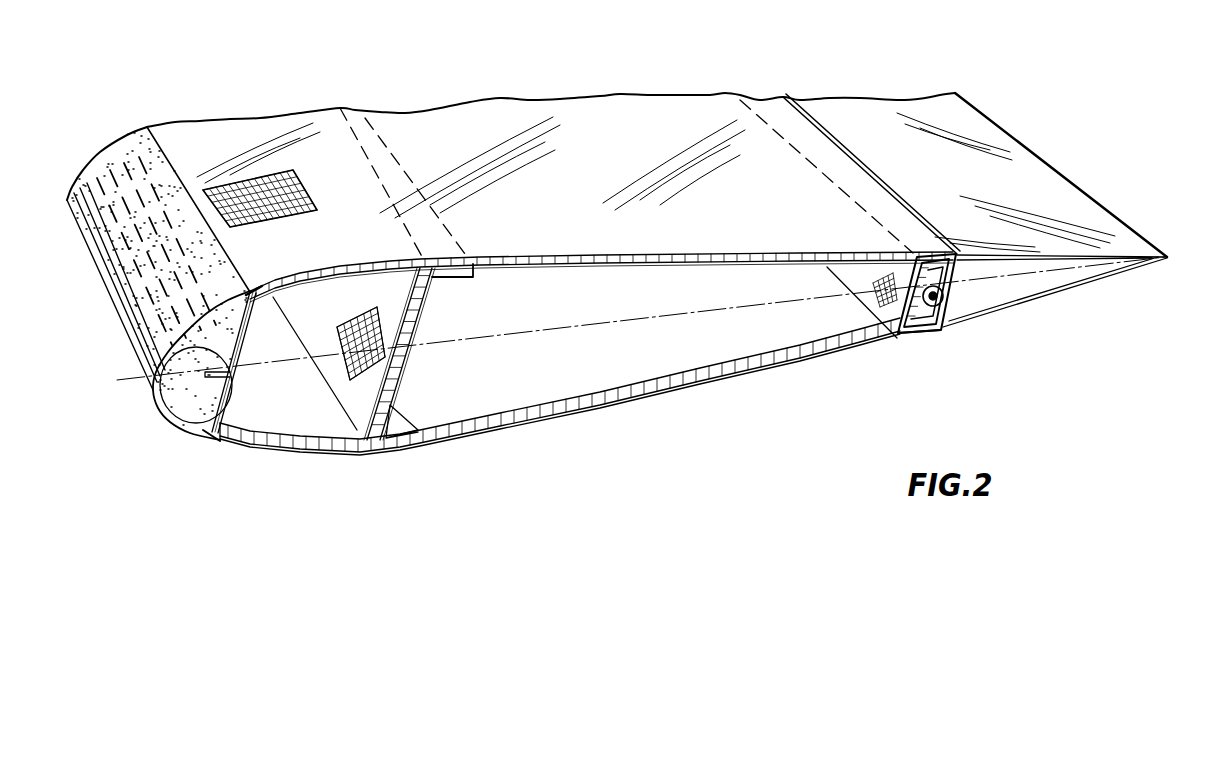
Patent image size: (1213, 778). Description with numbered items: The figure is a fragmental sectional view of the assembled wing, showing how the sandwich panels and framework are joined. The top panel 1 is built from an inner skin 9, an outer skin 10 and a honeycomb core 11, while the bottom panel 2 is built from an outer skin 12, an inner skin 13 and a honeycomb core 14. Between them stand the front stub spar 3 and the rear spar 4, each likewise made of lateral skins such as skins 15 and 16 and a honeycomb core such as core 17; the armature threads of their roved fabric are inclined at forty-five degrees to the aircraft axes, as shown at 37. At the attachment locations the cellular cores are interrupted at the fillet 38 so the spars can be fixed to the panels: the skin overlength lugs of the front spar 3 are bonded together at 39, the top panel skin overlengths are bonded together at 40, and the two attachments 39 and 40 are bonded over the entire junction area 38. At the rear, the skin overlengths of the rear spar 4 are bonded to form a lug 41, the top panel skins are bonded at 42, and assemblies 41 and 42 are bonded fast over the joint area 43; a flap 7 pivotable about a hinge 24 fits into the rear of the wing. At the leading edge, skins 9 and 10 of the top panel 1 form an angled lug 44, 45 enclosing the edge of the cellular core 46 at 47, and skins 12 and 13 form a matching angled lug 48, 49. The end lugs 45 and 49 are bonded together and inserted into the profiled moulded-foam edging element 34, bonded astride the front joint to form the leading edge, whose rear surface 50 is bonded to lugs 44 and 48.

The top panel 1 is at (660, 253).
The bottom panel 2 is at (732, 388).
The front stub spar 3 is at (421, 378).
The rear spar 4 is at (871, 311).
The flap 7 is at (1056, 283).
The inner skin 9 is at (323, 275).
The outer skin 10 is at (340, 265).
The honeycomb core 11 is at (792, 258).
The outer skin 12 is at (245, 449).
The inner skin 13 is at (262, 434).
The honeycomb core 14 is at (768, 366).
The lateral skin 15 is at (420, 304).
The lateral skin 16 is at (372, 407).
The honeycomb core 17 is at (395, 305).
The hinge 24 is at (927, 323).
The profiled edging element 34 is at (186, 427).
The armature threads 37 is at (338, 366).
The fillet 38 is at (362, 158).
The bonded attachment 39 is at (447, 268).
The bonded attachment 40 is at (448, 257).
The lug 41 is at (958, 283).
The bonded attachment 42 is at (930, 260).
The joint area 43 is at (812, 153).
The angled lug 44 is at (248, 334).
The end lug 45 is at (153, 357).
The cellular core 46 is at (310, 270).
The core edge enclosure 47 is at (260, 281).
The angled lug 48 is at (222, 397).
The end lug 49 is at (165, 400).
The rear surface 50 is at (225, 312).